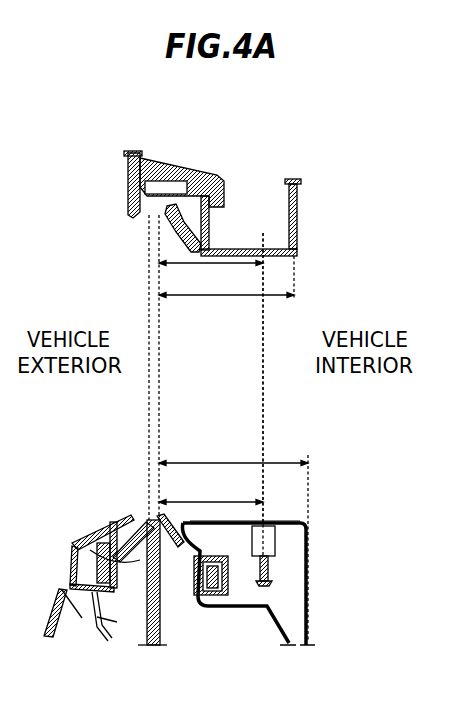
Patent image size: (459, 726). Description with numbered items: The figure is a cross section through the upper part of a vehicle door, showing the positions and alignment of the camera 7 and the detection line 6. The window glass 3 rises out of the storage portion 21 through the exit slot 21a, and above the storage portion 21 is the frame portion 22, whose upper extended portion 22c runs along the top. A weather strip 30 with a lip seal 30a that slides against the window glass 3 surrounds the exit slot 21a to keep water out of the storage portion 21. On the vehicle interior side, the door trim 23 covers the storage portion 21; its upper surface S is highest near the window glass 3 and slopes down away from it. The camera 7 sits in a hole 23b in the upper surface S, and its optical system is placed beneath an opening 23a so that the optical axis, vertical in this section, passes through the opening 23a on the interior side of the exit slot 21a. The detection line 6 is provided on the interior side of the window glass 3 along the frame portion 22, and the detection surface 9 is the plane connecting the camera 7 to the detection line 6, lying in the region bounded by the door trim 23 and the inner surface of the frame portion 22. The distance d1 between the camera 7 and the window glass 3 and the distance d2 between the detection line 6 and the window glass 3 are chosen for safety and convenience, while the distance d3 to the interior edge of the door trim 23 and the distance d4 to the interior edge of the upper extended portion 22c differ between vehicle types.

The frame portion 22 is at (128, 180).
The upper extended portion 22c is at (300, 195).
The detection line 6 is at (270, 243).
The detection surface 9 is at (263, 388).
The window glass 3 is at (160, 627).
The exit slot 21a is at (145, 520).
The weather strip 30 is at (84, 519).
The lip seal 30a is at (108, 544).
The storage portion 21 is at (58, 591).
The door trim 23 is at (310, 638).
The opening 23a is at (310, 522).
The hole 23b is at (275, 538).
The camera 7 is at (276, 562).
The upper surface S is at (253, 522).
The distance d1 is at (211, 491).
The distance d2 is at (211, 276).
The distance d3 is at (233, 452).
The distance d4 is at (226, 308).